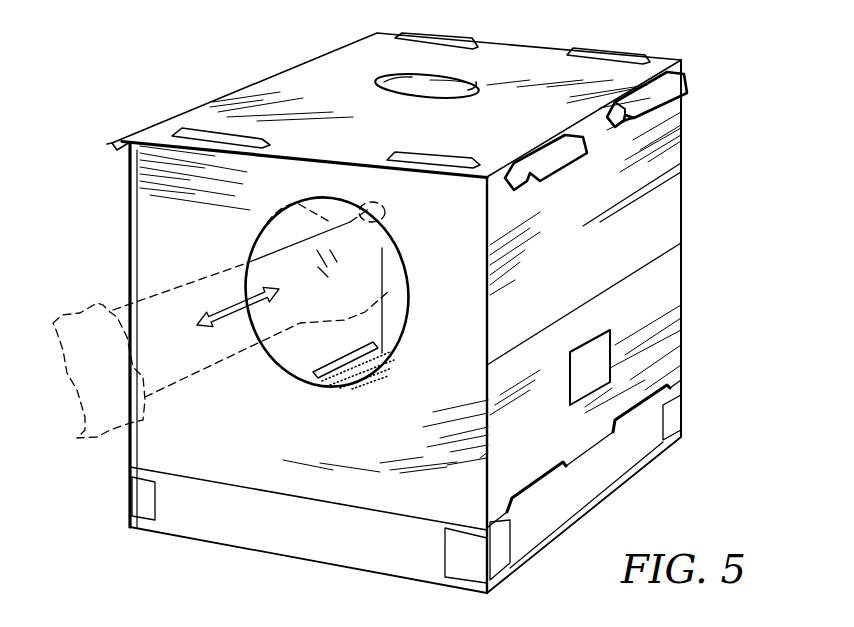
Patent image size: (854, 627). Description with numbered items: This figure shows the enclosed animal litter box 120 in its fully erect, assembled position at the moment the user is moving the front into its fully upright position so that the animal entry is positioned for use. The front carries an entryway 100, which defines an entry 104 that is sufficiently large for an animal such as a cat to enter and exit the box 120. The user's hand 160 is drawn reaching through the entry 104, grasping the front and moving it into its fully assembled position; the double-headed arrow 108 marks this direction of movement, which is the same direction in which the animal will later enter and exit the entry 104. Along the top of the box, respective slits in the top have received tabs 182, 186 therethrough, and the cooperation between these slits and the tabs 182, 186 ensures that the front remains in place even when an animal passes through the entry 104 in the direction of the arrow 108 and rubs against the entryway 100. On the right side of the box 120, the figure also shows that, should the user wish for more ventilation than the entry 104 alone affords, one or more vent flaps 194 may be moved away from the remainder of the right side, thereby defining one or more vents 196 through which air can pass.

The enclosed litter box 120 is at (703, 180).
The tab 182 is at (220, 134).
The tab 186 is at (430, 158).
The vent flap 194 is at (688, 83).
The vent 196 is at (630, 127).
The entryway 100 is at (312, 347).
The entry 104 is at (343, 338).
The hand 160 is at (155, 298).
The double-headed arrow 108 is at (222, 308).